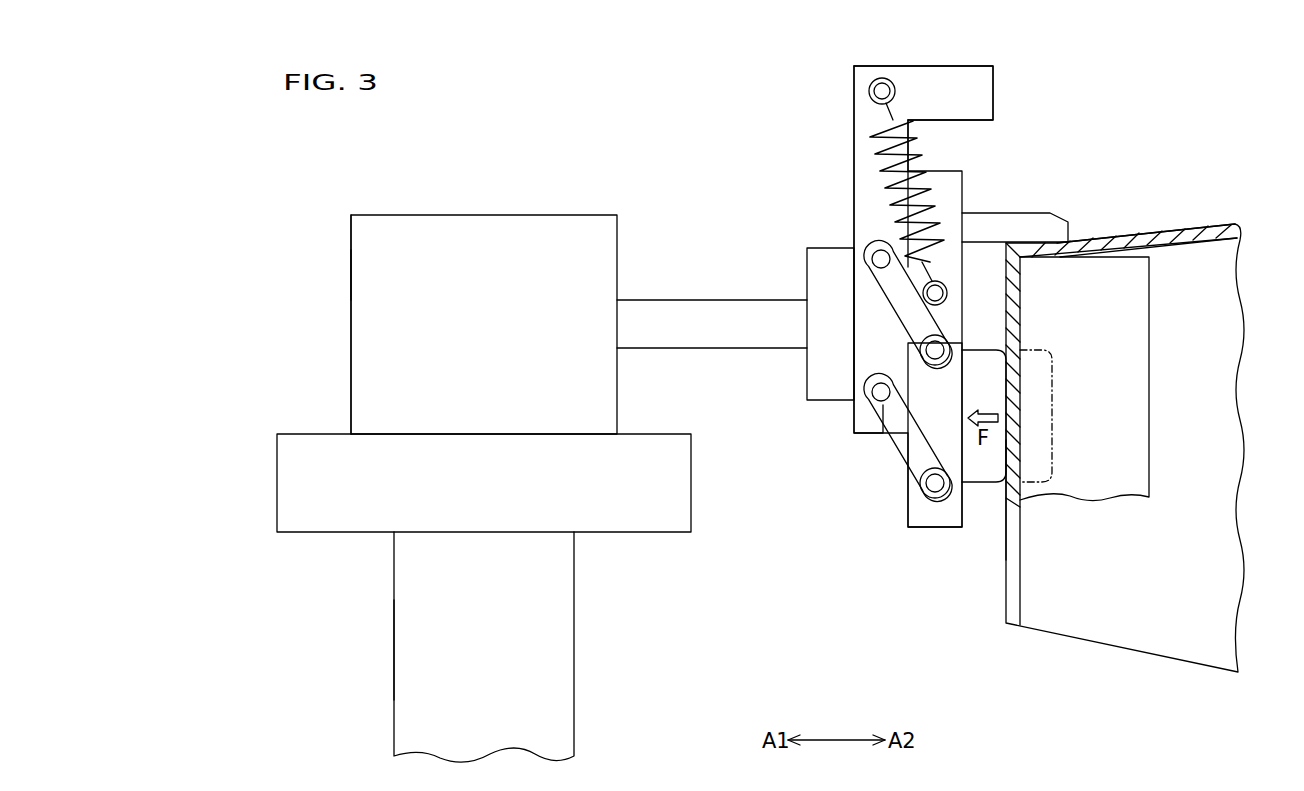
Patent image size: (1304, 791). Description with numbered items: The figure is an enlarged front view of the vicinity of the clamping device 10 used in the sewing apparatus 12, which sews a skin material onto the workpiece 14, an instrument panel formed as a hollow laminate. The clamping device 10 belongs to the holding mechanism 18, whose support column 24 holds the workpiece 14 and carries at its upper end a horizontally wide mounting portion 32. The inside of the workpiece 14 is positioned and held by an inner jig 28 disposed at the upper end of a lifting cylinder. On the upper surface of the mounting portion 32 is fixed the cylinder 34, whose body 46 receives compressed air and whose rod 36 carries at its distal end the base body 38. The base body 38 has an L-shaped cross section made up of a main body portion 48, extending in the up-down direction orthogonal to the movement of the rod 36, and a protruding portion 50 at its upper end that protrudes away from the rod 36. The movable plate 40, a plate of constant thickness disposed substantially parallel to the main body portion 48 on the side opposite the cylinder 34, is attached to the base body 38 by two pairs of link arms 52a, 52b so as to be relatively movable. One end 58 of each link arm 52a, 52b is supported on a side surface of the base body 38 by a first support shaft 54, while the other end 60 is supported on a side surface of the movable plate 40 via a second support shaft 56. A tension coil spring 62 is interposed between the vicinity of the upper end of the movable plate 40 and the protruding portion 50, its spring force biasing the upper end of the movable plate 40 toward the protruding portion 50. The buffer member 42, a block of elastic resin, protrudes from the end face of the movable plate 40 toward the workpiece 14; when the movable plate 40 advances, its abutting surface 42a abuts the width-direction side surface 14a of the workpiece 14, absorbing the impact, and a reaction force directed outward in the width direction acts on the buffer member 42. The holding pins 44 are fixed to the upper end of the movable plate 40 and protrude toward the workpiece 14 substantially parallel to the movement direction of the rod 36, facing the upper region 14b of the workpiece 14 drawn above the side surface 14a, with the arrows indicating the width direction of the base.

The clamping device 10 is at (490, 147).
The sewing apparatus 12 is at (1246, 89).
The workpiece 14 is at (1202, 215).
The width-direction side surface 14a is at (1005, 462).
The upper wall of door panel 14b is at (1068, 248).
The holding mechanism 18 is at (380, 651).
The support column 24 is at (557, 652).
The inner jig 28 is at (1137, 418).
The mounting portion 32 is at (292, 481).
The cylinder 34 is at (349, 275).
The rod 36 is at (683, 312).
The base body 38 is at (962, 56).
The movable plate 40 is at (904, 514).
The buffer member 42 is at (993, 382).
The end face (abutting surface) 42a is at (1030, 430).
The holding pins 44 is at (1012, 222).
The body 46 is at (541, 228).
The main body portion 48 is at (863, 183).
The protruding portion 50 is at (985, 97).
The link arm 52a is at (890, 300).
The link arm 52b is at (900, 450).
The first support shaft 54 is at (881, 259).
The second support shaft 56 is at (935, 350).
The one end 58 is at (872, 250).
The other end 60 is at (948, 351).
The spring 62 is at (880, 128).